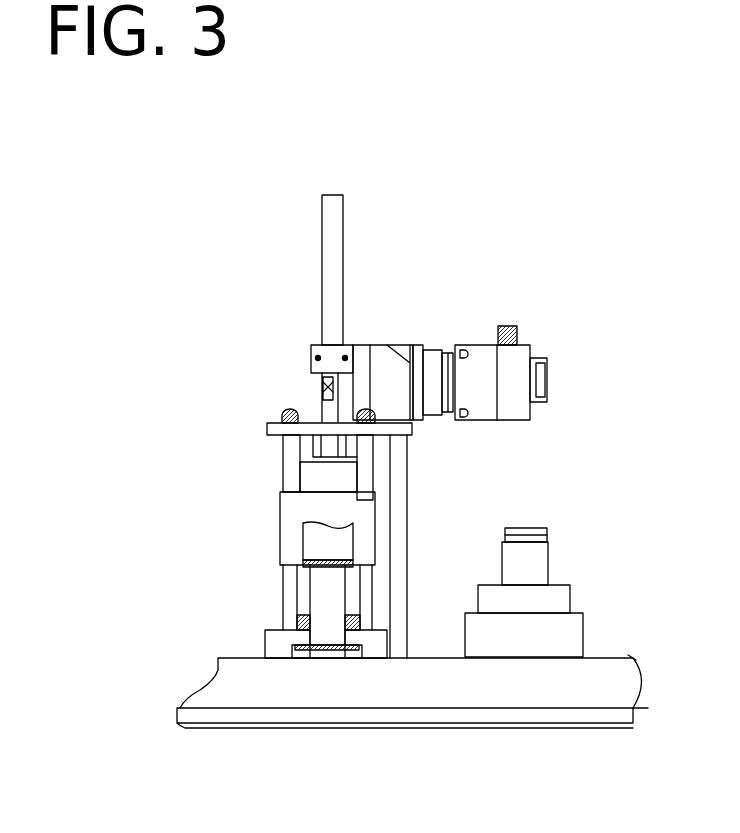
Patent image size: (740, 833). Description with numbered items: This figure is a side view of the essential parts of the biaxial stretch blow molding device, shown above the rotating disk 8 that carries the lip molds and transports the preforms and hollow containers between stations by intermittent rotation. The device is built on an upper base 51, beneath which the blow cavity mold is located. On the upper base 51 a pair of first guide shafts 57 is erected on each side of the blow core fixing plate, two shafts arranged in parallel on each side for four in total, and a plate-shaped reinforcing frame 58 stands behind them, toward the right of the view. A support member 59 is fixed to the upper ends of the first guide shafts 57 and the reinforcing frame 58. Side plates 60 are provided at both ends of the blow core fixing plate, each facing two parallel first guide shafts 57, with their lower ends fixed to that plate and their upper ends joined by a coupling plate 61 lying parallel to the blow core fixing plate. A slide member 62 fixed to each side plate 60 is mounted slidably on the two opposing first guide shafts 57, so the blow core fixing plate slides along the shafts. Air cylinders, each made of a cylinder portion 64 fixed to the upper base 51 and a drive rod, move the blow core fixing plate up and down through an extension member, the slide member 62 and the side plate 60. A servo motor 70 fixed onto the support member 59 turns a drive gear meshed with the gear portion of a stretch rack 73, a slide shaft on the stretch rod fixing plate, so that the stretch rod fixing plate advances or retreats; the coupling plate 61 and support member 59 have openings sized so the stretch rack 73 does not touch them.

The stretch rack 73 is at (344, 240).
The servo motor 70 is at (475, 358).
The support member 59 is at (277, 423).
The first guide shaft 57 is at (288, 468).
The coupling plate 61 is at (375, 458).
The side plate 60 is at (347, 480).
The slide member 62 is at (298, 510).
The cylinder portion 64 is at (315, 545).
The reinforcing frame 58 is at (400, 549).
The upper base 51 is at (203, 685).
The rotating disk 8 is at (242, 728).